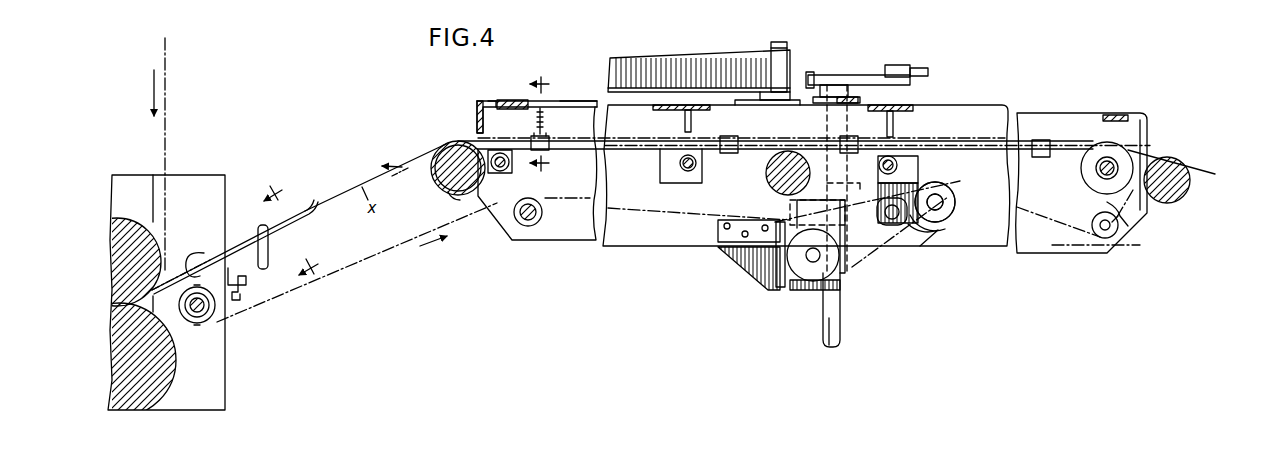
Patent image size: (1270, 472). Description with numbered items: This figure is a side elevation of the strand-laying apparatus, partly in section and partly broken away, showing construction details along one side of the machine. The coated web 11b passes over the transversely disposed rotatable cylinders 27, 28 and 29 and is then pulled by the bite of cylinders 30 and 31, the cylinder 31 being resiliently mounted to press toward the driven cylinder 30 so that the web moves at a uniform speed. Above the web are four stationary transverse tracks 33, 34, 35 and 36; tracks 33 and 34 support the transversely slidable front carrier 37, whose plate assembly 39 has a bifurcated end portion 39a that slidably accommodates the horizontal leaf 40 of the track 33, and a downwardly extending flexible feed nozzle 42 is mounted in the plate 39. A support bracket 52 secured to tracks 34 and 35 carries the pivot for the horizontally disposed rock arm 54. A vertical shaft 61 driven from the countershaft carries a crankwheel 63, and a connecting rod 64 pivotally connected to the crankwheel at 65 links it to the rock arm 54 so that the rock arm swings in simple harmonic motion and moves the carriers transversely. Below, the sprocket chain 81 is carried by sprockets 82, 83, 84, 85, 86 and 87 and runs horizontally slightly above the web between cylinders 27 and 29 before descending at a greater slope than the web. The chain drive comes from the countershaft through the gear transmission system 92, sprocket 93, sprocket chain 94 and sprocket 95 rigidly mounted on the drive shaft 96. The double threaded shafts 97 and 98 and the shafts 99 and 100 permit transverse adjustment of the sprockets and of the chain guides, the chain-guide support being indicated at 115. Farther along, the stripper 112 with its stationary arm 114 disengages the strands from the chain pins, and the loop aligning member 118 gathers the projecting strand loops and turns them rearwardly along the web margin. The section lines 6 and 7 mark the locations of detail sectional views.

The rotatable cylinder 27 is at (1178, 201).
The rotatable cylinder 28 is at (767, 179).
The rotatable cylinder 29 is at (443, 190).
The cylinder 30 is at (112, 233).
The cylinder 31 is at (168, 385).
The track 33 is at (476, 108).
The track 34 is at (677, 111).
The track 35 is at (913, 115).
The track 36 is at (1148, 123).
The front carrier 37 is at (579, 99).
The plate assembly 39 is at (570, 101).
The bifurcated end portion 39a is at (510, 100).
The horizontal leaf 40 is at (492, 100).
The flexible feed nozzle 42 is at (545, 117).
The support bracket 52 is at (740, 106).
The rock arm 54 is at (700, 49).
The vertical shaft 61 is at (843, 337).
The crankwheel 63 is at (860, 75).
The connecting rod 64 is at (923, 69).
The pivotal connection 65 is at (896, 65).
The sprocket chain 81 is at (315, 211).
The sprocket 82 is at (1093, 221).
The sprocket 83 is at (1085, 169).
The sprocket 84 is at (455, 196).
The sprocket 85 is at (190, 323).
The sprocket 86 is at (542, 217).
The sprocket 87 is at (887, 222).
The gear transmission system 92 is at (803, 292).
The sprocket 93 is at (797, 266).
The sprocket chain 94 is at (873, 256).
The sprocket 95 is at (944, 237).
The shaft 96 is at (950, 193).
The double threaded shaft 97 is at (1112, 160).
The double threaded shaft 98 is at (905, 166).
The shaft 99 is at (699, 165).
The shaft 100 is at (512, 170).
The stripper 112 is at (297, 213).
The arm 114 is at (257, 225).
The chain support 115 is at (248, 270).
The loop aligning member 118 is at (188, 250).
The coated web 11b is at (412, 163).
The section line 6 is at (547, 124).
The section line 7 is at (298, 224).